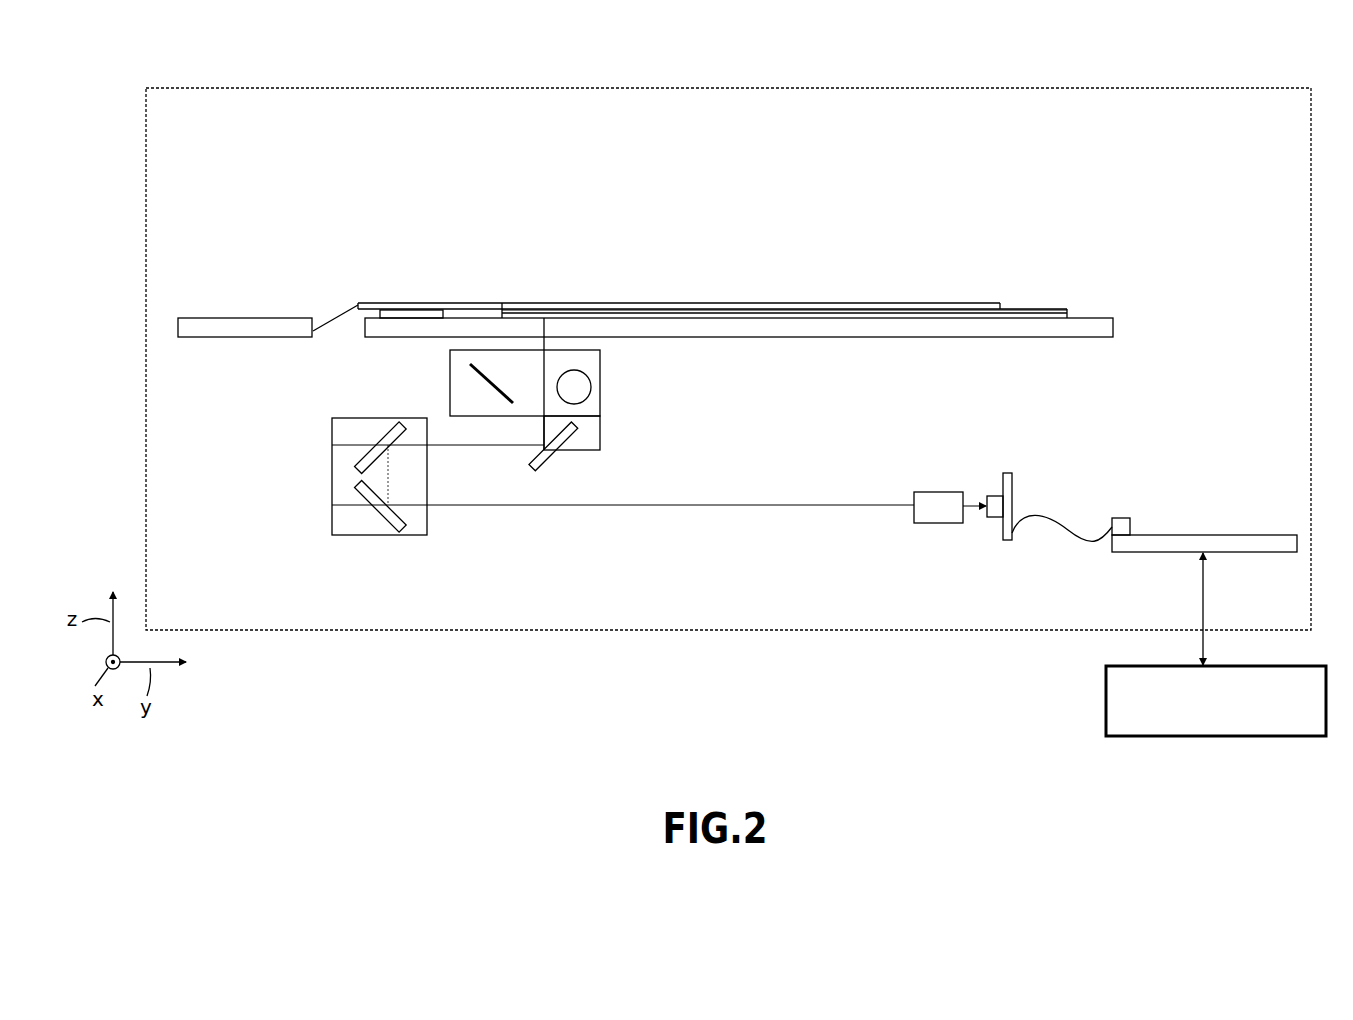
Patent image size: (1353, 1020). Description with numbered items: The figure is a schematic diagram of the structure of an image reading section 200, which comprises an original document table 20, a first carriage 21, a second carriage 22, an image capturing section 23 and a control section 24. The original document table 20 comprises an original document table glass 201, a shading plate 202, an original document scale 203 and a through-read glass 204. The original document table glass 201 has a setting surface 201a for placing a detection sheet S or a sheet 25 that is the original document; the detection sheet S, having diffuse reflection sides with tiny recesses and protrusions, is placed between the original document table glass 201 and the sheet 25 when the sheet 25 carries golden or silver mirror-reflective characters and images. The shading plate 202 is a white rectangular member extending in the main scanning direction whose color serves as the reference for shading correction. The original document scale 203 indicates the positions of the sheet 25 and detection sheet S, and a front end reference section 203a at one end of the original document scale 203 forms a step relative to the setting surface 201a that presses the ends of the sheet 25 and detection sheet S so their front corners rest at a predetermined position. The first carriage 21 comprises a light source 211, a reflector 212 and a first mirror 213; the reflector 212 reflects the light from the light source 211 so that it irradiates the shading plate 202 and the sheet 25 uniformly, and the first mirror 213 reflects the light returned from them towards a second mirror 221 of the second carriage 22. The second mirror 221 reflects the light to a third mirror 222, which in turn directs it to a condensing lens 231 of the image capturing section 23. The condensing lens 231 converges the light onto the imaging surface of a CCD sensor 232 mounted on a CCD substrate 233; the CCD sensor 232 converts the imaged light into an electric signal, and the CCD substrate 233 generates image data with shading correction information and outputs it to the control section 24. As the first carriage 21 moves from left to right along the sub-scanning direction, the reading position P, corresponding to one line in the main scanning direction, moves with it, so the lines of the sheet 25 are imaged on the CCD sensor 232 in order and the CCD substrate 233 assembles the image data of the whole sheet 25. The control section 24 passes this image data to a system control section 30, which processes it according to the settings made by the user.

The image reading section 200 is at (822, 88).
The original document table 20 is at (771, 213).
The original document table glass 201 is at (773, 338).
The setting surface 201a is at (862, 313).
The shading plate 202 is at (415, 308).
The original document scale 203 is at (333, 318).
The front end reference section 203a is at (505, 315).
The through-read glass 204 is at (242, 328).
The sheet 25 is at (619, 308).
The detection sheet S is at (656, 312).
The reading position P is at (547, 328).
The first carriage 21 is at (534, 422).
The light source 211 is at (594, 370).
The reflector 212 is at (477, 380).
The first mirror 213 is at (546, 463).
The second carriage 22 is at (351, 507).
The second mirror 221 is at (372, 440).
The third mirror 222 is at (372, 504).
The image capturing section 23 is at (1025, 430).
The condensing lens 231 is at (928, 500).
The CCD sensor 232 is at (992, 498).
The CCD substrate 233 is at (997, 535).
The control section 24 is at (1208, 535).
The system control section 30 is at (1106, 692).